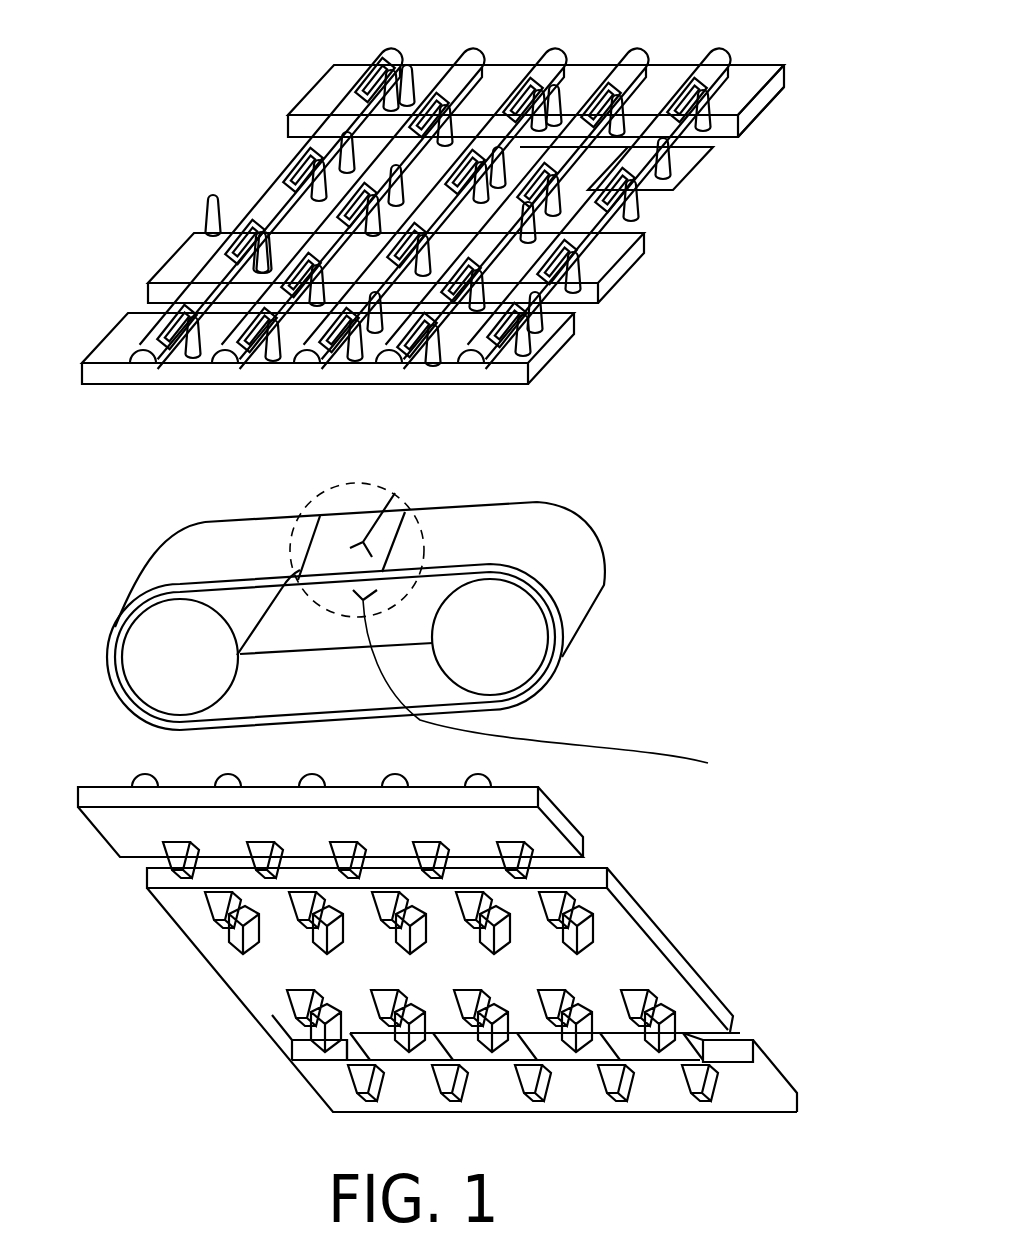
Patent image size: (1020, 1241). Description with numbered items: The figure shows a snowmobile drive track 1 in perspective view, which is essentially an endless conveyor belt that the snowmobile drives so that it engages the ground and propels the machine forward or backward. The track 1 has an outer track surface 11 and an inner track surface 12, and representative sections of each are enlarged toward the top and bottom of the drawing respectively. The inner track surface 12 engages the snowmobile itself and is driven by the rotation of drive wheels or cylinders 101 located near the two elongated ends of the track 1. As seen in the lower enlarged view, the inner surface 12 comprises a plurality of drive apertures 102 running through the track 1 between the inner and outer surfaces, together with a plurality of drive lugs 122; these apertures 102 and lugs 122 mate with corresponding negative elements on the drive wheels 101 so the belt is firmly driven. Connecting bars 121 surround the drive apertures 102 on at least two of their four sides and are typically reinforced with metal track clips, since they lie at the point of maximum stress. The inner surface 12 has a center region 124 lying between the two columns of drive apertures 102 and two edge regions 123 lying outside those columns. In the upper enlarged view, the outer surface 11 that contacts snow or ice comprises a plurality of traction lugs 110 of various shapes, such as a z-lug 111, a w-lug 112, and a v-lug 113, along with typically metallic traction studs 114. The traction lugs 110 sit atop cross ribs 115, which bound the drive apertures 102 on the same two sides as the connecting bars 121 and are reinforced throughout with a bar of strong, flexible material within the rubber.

The snowmobile drive track 1 is at (394, 606).
The outer track surface 11 is at (395, 493).
The inner track surface 12 is at (700, 902).
The drive wheels or cylinders 101 is at (180, 660).
The drive apertures 102 is at (327, 282).
The traction lugs 110 is at (818, 296).
The z-lug configuration 111 is at (620, 168).
The w-lug configuration 112 is at (400, 373).
The v-lug configuration 113 is at (500, 272).
The traction studs 114 is at (573, 60).
The cross ribs 115 is at (500, 330).
The connecting bars 121 is at (667, 1053).
The drive lugs 122 is at (695, 1090).
The edge regions 123 is at (335, 840).
The center region 124 is at (483, 987).